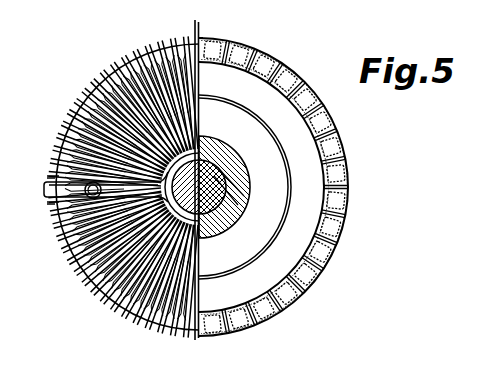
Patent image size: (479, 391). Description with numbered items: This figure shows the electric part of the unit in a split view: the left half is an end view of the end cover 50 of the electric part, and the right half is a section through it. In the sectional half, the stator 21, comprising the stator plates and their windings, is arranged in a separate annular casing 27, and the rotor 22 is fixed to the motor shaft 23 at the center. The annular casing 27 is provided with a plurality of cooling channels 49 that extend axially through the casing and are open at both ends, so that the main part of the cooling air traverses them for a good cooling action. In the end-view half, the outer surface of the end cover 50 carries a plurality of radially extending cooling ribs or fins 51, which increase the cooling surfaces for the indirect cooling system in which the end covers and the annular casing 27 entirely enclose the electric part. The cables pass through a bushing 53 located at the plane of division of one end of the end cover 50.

The stator 21 is at (307, 237).
The rotor 22 is at (252, 243).
The motor shaft 23 is at (210, 210).
The annular casing 27 is at (333, 124).
The cooling channels 49 is at (271, 70).
The end cover 50 is at (80, 122).
The cooling ribs or fins 51 is at (106, 291).
The bushing 53 is at (100, 183).